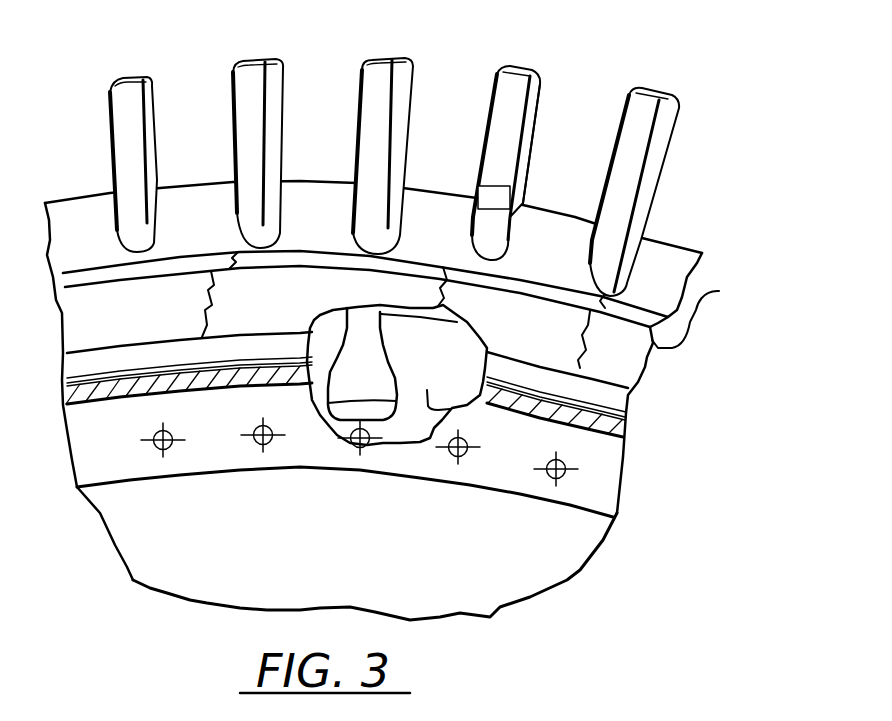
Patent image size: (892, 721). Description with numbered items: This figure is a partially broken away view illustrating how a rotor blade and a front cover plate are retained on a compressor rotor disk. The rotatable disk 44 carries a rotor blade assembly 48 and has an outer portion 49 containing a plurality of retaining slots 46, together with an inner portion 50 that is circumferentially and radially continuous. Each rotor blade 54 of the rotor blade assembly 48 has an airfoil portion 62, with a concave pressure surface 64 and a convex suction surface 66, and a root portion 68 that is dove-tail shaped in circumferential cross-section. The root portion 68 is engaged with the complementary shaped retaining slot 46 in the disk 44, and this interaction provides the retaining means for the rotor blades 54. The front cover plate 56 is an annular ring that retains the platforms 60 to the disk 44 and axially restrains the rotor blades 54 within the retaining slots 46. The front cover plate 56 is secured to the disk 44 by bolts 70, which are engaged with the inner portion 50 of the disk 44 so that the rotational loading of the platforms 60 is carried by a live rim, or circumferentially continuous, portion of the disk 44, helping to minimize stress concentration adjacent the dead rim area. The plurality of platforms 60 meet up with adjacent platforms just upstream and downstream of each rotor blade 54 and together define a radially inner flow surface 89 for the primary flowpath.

The disk 44 is at (173, 548).
The retaining slot 46 is at (335, 445).
The rotor blade assembly 48 is at (288, 72).
The outer portion 49 is at (395, 357).
The inner portion 50 is at (557, 570).
The rotor blade 54 is at (517, 139).
The front cover plate 56 is at (703, 312).
The platform 60 is at (670, 272).
The airfoil portion 62 is at (494, 198).
The concave pressure surface 64 is at (530, 151).
The convex suction surface 66 is at (487, 105).
The root portion 68 is at (339, 392).
The bolt 70 is at (553, 462).
The radially inner flow surface 89 is at (313, 182).